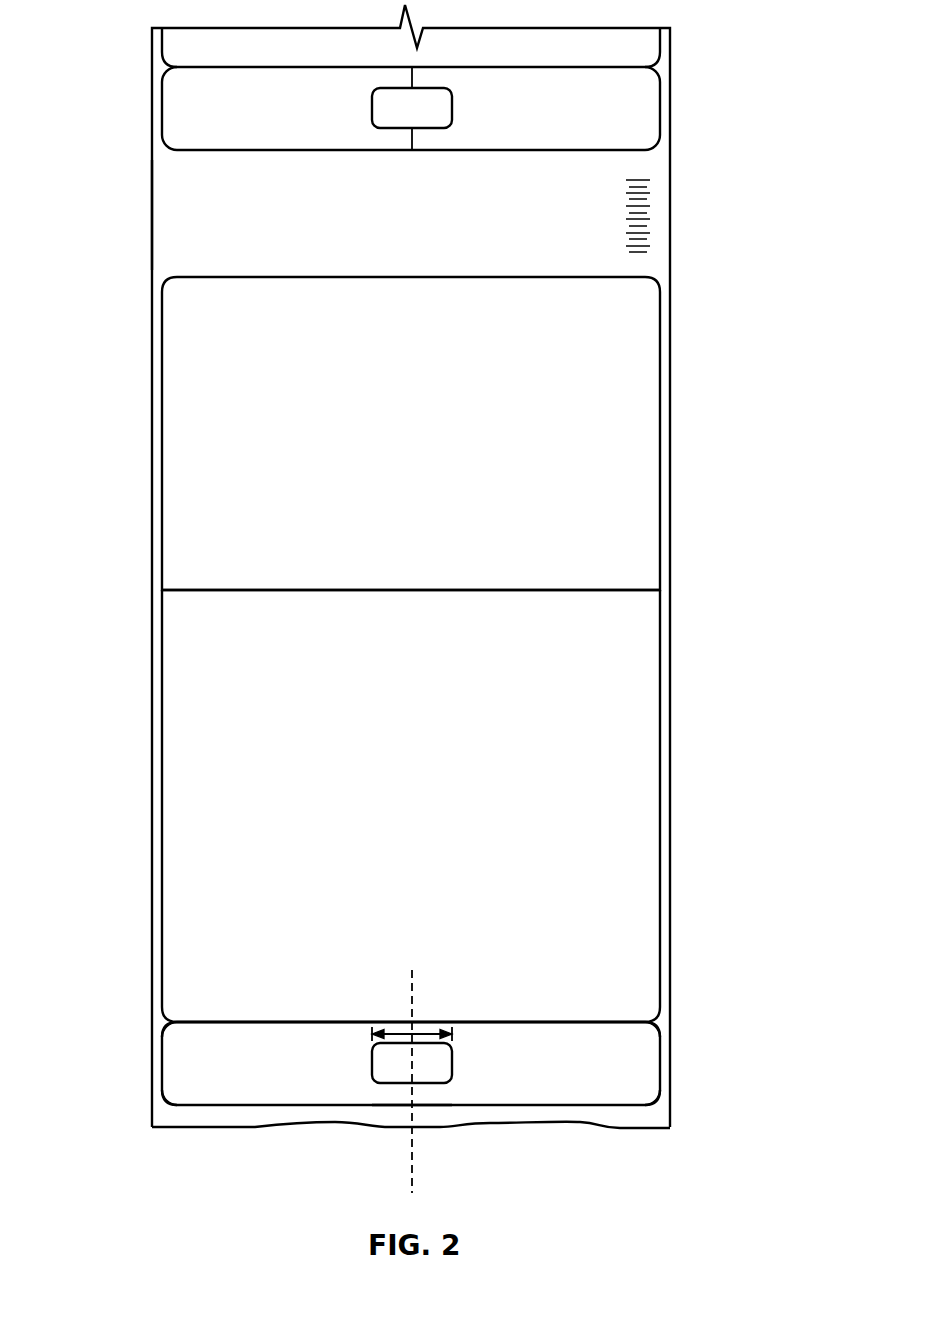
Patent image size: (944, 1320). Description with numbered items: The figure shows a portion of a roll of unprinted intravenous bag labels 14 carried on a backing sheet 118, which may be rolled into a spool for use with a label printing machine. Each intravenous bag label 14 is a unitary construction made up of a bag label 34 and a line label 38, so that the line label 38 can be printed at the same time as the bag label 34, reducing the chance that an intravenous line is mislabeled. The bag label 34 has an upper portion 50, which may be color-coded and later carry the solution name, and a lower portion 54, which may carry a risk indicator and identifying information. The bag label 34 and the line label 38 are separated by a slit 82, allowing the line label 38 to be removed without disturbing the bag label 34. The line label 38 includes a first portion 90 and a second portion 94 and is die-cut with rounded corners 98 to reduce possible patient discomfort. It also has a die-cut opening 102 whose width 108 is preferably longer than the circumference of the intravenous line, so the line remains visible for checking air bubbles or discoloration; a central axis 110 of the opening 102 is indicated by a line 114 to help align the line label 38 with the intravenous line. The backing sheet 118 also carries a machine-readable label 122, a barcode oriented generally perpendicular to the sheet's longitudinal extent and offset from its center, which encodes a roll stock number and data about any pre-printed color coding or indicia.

The intravenous bag label 14 is at (724, 46).
The bag label 34 is at (690, 602).
The line label 38 is at (663, 106).
The upper portion 50 is at (623, 429).
The lower portion 54 is at (623, 809).
The slit 82 is at (611, 1022).
The first portion 90 is at (241, 1088).
The second portion 94 is at (585, 1105).
The rounded corners 98 is at (162, 1030).
The opening 102 is at (390, 100).
The width 108 is at (425, 1032).
The central axis 110 is at (410, 1178).
The line 114 is at (410, 1094).
The backing sheet 118 is at (168, 215).
The machine-readable label 122 is at (650, 216).